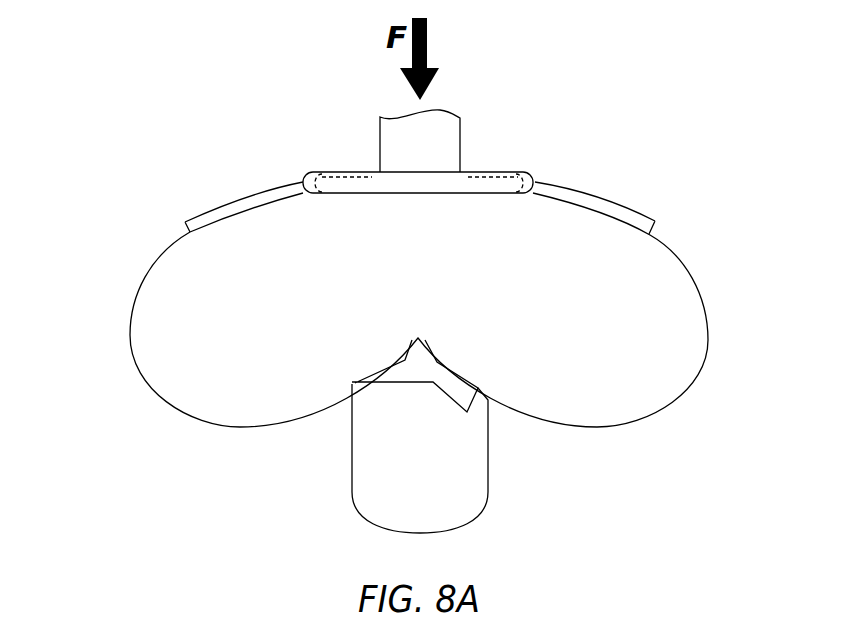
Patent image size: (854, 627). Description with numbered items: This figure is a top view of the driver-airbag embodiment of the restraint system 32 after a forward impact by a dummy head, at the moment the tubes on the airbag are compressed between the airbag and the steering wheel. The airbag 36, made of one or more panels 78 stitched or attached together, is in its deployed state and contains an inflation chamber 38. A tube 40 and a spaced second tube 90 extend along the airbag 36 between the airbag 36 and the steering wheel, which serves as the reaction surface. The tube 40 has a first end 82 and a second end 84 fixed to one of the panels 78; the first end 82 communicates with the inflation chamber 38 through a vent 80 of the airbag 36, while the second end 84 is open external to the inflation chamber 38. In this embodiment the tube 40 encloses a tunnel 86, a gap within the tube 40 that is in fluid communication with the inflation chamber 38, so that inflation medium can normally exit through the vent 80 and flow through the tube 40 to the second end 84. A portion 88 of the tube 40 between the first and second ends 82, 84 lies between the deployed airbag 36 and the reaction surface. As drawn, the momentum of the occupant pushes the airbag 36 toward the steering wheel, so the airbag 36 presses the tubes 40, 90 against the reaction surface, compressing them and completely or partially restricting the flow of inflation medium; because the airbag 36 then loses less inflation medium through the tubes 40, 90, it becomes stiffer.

The restraint system 32 is at (80, 191).
The airbag 36 is at (130, 335).
The inflation chamber 38 is at (168, 368).
The tube 40 is at (597, 194).
The panel 78 is at (617, 427).
The vent 80 is at (360, 193).
The first end 82 is at (374, 176).
The second end 84 is at (187, 220).
The tunnel 86 is at (277, 188).
The portion 88 is at (310, 172).
The second tube 90 is at (245, 192).